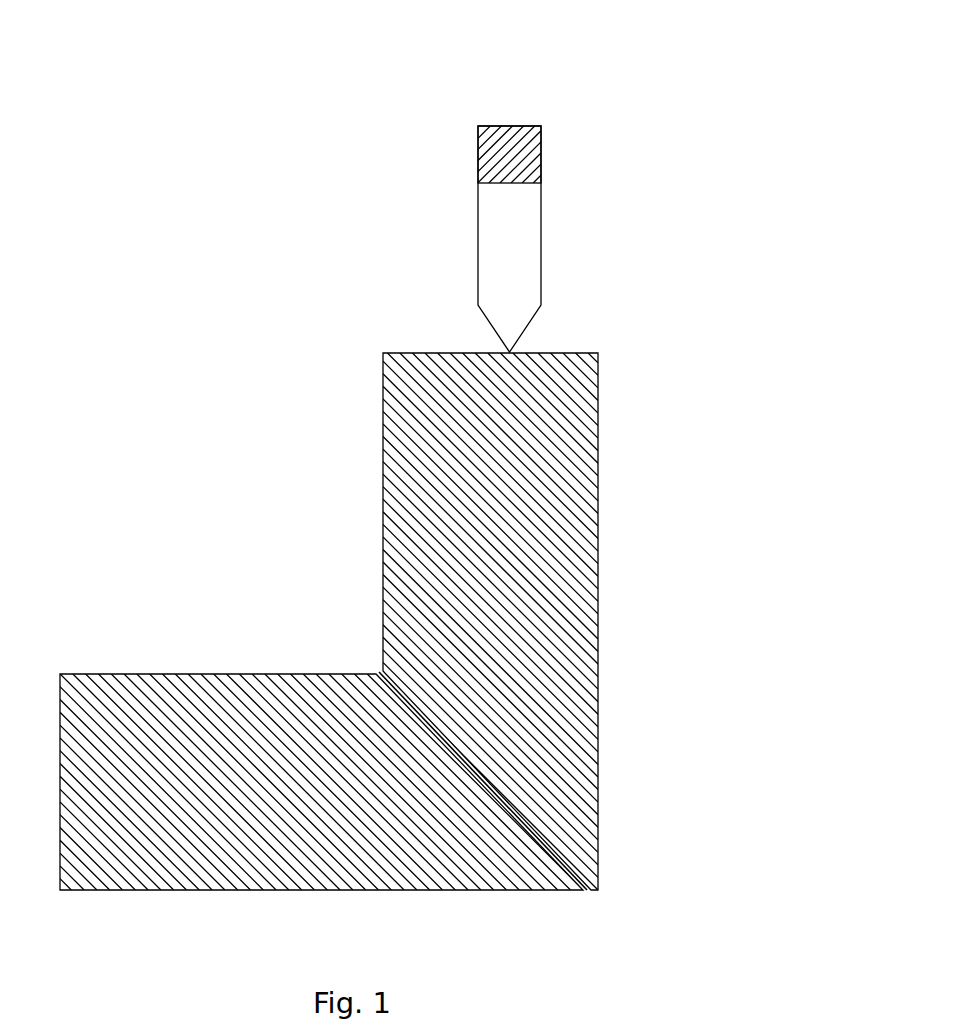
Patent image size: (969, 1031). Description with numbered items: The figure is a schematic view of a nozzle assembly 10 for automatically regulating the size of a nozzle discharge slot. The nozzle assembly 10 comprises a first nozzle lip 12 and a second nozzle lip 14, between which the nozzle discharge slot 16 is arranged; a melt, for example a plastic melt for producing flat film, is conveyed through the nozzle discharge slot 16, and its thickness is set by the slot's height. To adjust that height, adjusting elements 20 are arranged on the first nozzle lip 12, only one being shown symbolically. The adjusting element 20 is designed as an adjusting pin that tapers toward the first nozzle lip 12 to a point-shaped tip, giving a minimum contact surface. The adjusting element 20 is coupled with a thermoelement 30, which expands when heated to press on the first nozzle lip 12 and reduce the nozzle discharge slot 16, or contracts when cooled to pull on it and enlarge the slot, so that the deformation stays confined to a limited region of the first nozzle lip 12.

The nozzle assembly 10 is at (631, 483).
The first nozzle lip 12 is at (528, 633).
The second nozzle lip 14 is at (440, 845).
The nozzle discharge slot 16 is at (582, 865).
The adjusting element 20 is at (505, 257).
The thermoelement 30 is at (522, 138).